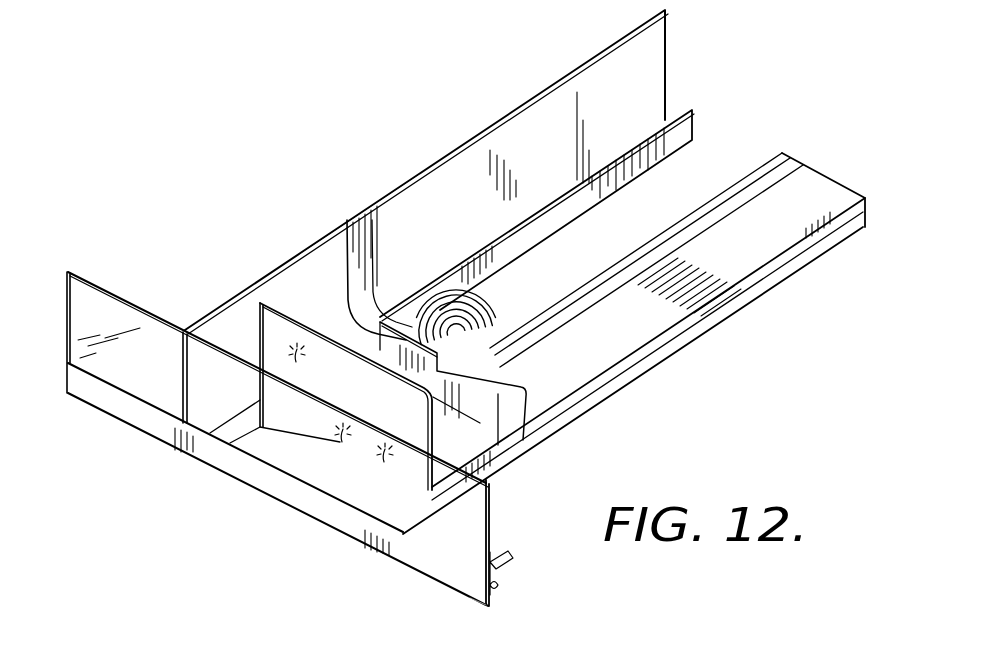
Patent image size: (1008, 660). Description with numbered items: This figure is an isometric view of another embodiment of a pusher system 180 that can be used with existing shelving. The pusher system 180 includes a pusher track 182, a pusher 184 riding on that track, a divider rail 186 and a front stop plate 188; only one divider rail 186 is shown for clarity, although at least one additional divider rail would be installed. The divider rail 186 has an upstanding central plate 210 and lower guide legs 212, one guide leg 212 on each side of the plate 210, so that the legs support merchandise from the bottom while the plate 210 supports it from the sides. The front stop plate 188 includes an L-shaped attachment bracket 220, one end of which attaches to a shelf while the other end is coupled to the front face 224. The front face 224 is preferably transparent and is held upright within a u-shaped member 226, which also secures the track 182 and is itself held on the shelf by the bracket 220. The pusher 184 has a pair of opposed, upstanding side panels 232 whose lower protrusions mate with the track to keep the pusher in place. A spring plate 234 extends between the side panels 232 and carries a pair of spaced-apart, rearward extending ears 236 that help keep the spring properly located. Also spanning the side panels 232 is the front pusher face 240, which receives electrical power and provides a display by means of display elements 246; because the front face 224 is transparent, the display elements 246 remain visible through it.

The pusher system 180 is at (232, 206).
The pusher track 182 is at (819, 172).
The pusher 184 is at (529, 437).
The divider rail 186 is at (586, 80).
The front stop plate 188 is at (68, 312).
The upstanding central plate 210 is at (655, 63).
The lower guide leg 212 is at (696, 118).
The L-shaped attachment bracket 220 is at (513, 553).
The front face 224 is at (489, 515).
The u-shaped member 226 is at (484, 601).
The side panel 232 is at (508, 447).
The spring plate 234 is at (348, 226).
The ear 236 is at (473, 307).
The front pusher face 240 is at (257, 321).
The display element 246 is at (294, 362).